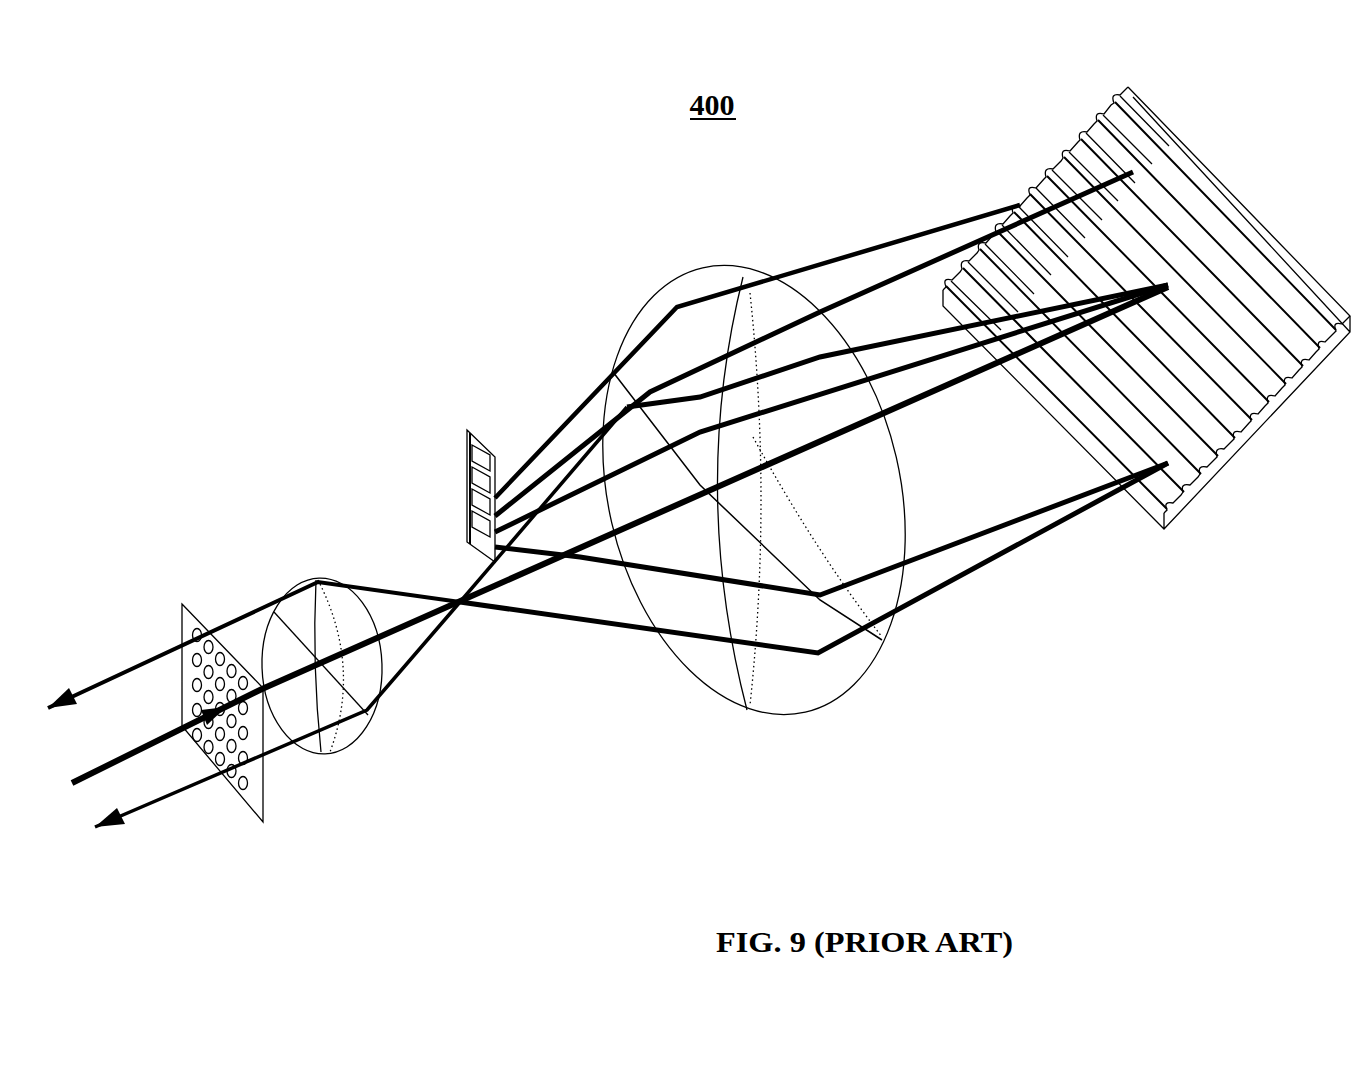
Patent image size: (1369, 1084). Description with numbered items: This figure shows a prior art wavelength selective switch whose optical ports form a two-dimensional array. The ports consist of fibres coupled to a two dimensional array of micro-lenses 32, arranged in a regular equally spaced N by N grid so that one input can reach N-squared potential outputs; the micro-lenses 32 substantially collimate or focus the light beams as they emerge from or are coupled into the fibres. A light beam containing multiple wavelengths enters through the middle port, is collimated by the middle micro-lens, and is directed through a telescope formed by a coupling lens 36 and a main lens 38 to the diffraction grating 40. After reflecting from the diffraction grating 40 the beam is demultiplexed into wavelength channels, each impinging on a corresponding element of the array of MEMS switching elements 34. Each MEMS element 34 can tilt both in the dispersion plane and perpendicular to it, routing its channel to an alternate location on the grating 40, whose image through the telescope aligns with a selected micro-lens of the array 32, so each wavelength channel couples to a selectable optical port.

The two dimensional array of micro-lenses 32 is at (257, 807).
The MEMS switching elements 34 is at (477, 440).
The coupling lens 36 is at (353, 740).
The main lens 38 is at (810, 687).
The diffraction grating 40 is at (1195, 501).